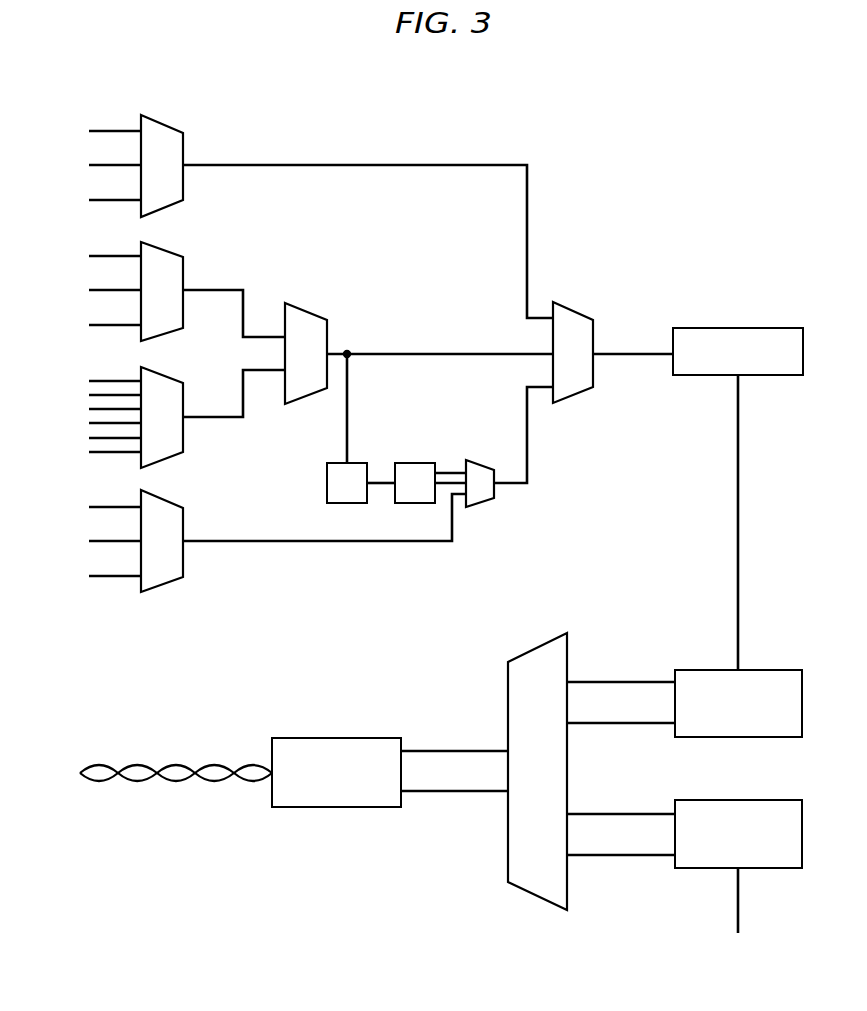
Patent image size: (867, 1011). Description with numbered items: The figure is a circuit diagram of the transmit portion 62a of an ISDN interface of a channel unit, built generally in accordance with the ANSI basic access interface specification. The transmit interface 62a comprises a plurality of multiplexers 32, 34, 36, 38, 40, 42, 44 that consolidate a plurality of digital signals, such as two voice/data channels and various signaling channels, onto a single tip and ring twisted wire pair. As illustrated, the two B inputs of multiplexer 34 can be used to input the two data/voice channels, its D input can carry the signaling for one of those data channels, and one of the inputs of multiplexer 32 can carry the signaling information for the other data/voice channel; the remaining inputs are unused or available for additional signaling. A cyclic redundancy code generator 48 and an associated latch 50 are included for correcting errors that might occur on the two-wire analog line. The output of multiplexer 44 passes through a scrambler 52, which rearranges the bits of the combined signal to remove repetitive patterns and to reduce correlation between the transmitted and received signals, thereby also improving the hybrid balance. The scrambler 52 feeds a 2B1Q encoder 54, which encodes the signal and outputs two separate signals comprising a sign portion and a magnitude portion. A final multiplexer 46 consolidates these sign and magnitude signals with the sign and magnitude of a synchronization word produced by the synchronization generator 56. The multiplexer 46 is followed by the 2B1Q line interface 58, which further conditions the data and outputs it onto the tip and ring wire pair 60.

The multiplexer 32 is at (183, 188).
The multiplexer 34 is at (183, 313).
The multiplexer 36 is at (183, 440).
The multiplexer 38 is at (183, 565).
The multiplexer 40 is at (310, 310).
The multiplexer 42 is at (482, 462).
The multiplexer 44 is at (593, 376).
The final multiplexer 46 is at (536, 648).
The cyclic redundancy code generator 48 is at (336, 463).
The latch 50 is at (408, 463).
The scrambler 52 is at (729, 328).
The 2B1Q encoder 54 is at (694, 670).
The synchronization generator 56 is at (733, 800).
The 2B1Q line interface 58 is at (316, 738).
The wire pair 60 is at (178, 763).
The transmit portion 62a is at (600, 125).